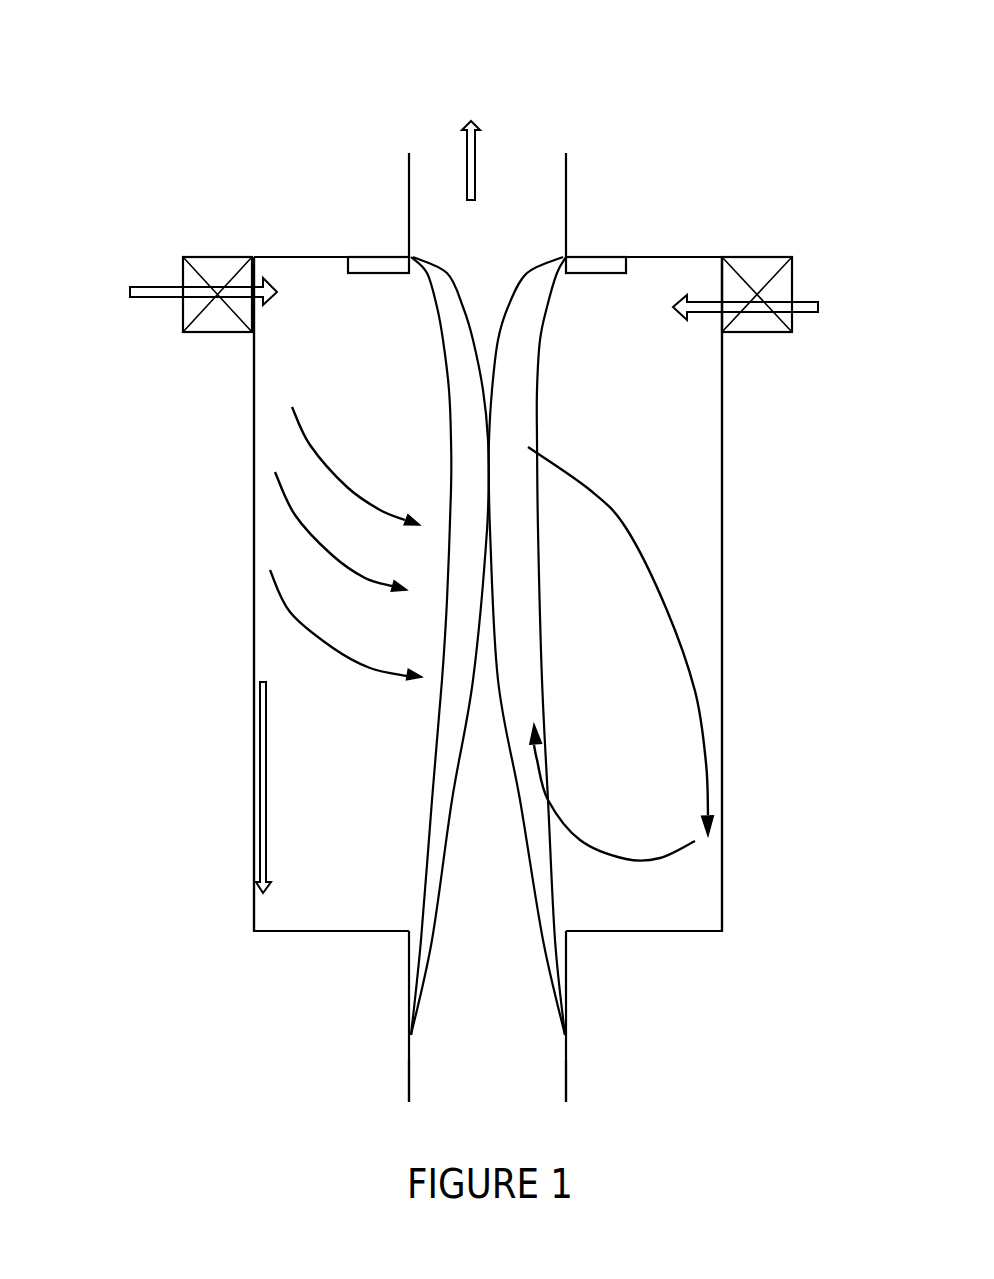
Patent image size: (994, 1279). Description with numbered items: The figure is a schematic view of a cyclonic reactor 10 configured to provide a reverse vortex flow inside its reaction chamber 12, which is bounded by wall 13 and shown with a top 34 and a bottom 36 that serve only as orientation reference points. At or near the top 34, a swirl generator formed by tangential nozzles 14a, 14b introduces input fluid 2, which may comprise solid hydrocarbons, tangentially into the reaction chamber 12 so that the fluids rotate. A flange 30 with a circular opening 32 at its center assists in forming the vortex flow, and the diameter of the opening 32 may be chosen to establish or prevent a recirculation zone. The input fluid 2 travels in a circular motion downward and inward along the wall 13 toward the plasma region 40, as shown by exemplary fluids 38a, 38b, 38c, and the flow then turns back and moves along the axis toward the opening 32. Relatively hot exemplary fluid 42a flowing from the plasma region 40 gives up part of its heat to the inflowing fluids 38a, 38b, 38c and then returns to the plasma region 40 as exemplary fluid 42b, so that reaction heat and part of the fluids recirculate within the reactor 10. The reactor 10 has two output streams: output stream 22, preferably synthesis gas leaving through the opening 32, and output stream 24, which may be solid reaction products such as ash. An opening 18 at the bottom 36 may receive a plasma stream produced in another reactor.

The reactor 10 is at (513, 35).
The reaction chamber 12 is at (683, 467).
The wall 13 is at (254, 393).
The nozzle 14a is at (208, 255).
The nozzle 14b is at (772, 257).
The input fluid 2 is at (130, 290).
The opening 18 is at (518, 1073).
The output stream 22 is at (467, 145).
The output stream 24 is at (262, 777).
The flange 30 is at (382, 255).
The circular opening 32 is at (518, 175).
The top 34 is at (650, 257).
The bottom 36 is at (627, 931).
The exemplary fluid 38a is at (347, 488).
The exemplary fluid 38b is at (332, 556).
The exemplary fluid 38c is at (333, 648).
The plasma region 40 is at (500, 577).
The exemplary fluid 42a is at (666, 608).
The exemplary fluid 42b is at (640, 860).